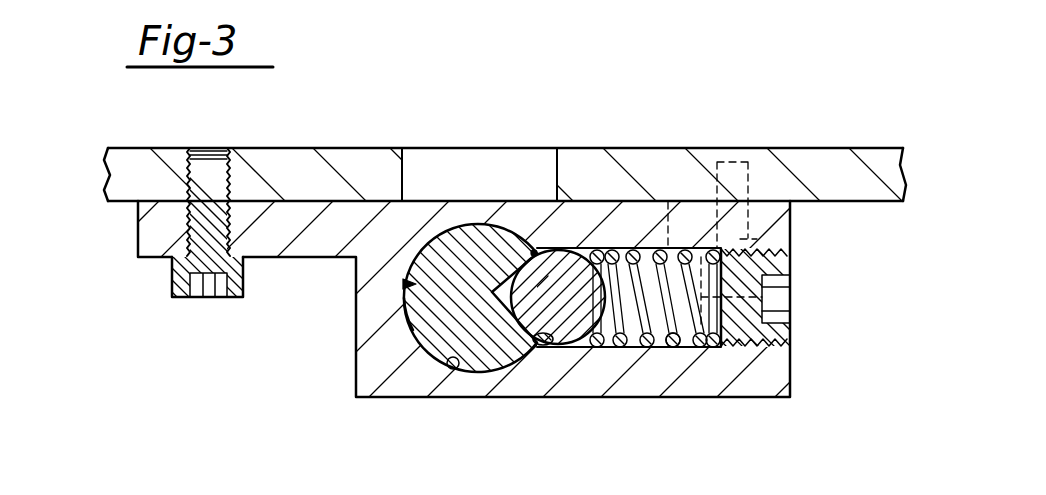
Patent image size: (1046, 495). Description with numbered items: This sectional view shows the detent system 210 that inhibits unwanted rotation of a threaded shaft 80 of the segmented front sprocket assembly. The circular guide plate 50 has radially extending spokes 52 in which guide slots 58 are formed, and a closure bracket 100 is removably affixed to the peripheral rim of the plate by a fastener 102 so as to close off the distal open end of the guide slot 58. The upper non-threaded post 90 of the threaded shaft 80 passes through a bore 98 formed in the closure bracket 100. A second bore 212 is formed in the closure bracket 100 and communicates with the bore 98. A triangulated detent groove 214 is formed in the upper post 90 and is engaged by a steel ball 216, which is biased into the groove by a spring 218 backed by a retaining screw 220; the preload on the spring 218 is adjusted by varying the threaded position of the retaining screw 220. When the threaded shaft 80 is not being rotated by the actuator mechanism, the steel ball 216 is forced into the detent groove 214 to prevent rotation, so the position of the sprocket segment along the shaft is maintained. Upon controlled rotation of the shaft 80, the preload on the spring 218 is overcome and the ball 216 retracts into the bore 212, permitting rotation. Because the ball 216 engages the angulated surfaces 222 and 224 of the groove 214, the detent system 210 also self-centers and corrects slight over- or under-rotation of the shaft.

The circular guide plate 50 is at (330, 135).
The spoke 52 is at (697, 168).
The guide slot 58 is at (557, 185).
The threaded shaft 80 is at (404, 283).
The upper non-threaded post 90 is at (413, 322).
The bore 98 is at (453, 370).
The closure bracket 100 is at (767, 388).
The fastener 102 is at (170, 276).
The detent system 210 is at (630, 362).
The bore 212 is at (671, 348).
The triangulated detent groove 214 is at (494, 276).
The steel ball 216 is at (575, 306).
The spring 218 is at (688, 349).
The retaining screw 220 is at (788, 330).
The angulated surface 222 is at (545, 346).
The angulated surface 224 is at (534, 252).